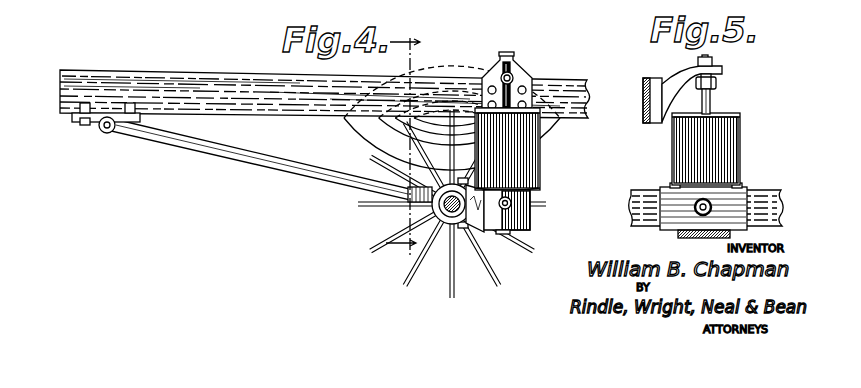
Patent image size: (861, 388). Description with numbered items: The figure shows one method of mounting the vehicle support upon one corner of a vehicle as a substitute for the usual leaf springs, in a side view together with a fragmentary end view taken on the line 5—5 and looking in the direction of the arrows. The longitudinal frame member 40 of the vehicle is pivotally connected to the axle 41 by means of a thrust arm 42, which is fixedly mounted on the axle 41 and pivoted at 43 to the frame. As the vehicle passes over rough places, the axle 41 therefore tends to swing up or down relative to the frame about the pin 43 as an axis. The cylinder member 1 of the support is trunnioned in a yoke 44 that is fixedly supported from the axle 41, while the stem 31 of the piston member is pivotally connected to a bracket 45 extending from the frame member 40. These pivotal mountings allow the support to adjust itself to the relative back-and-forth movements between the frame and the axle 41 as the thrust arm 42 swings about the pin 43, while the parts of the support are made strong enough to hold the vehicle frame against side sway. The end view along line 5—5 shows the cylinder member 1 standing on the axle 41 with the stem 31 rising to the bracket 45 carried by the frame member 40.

In FIG. 4, the cylinder member 1 is at (473, 222).
In FIG. 5, the cylinder member 1 is at (725, 149).
In FIG. 4, the section line 5— 5 is at (403, 144).
In FIG. 4, the stem 31 is at (519, 83).
In FIG. 5, the stem 31 is at (713, 102).
In FIG. 4, the longitudinal frame member 40 is at (181, 84).
In FIG. 5, the longitudinal frame member 40 is at (640, 100).
In FIG. 4, the axle 41 is at (450, 222).
In FIG. 5, the axle 41 is at (760, 197).
In FIG. 4, the thrust arm 42 is at (240, 163).
In FIG. 5, the thrust arm 42 is at (710, 198).
In FIG. 4, the pin 43 is at (100, 134).
In FIG. 4, the yoke 44 is at (501, 238).
In FIG. 4, the bracket 45 is at (512, 74).
In FIG. 5, the bracket 45 is at (675, 68).